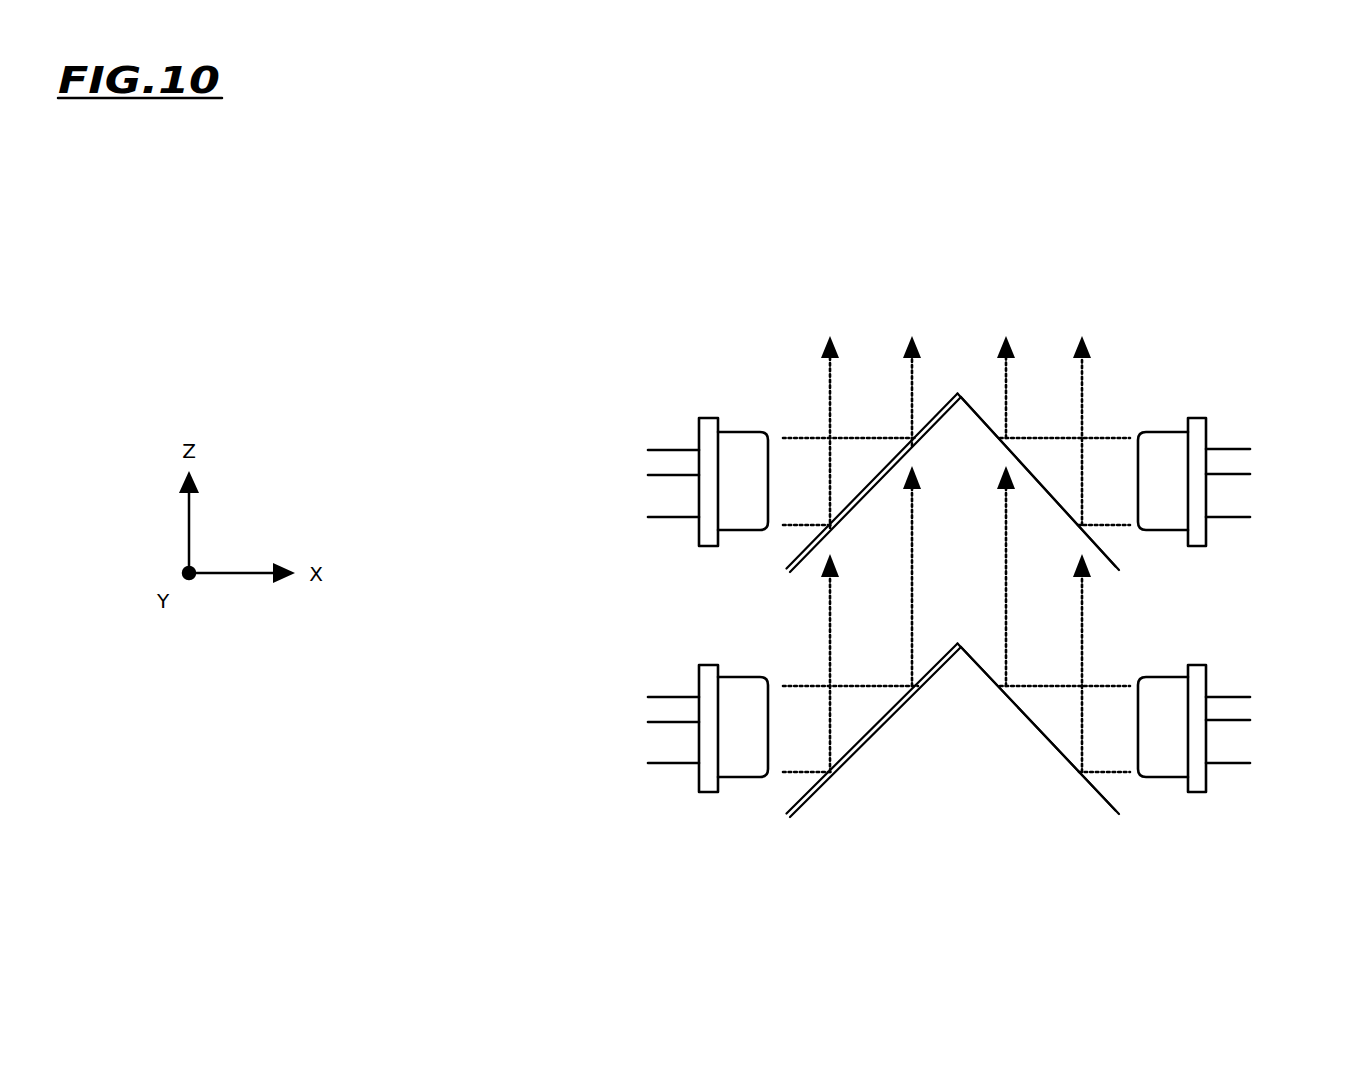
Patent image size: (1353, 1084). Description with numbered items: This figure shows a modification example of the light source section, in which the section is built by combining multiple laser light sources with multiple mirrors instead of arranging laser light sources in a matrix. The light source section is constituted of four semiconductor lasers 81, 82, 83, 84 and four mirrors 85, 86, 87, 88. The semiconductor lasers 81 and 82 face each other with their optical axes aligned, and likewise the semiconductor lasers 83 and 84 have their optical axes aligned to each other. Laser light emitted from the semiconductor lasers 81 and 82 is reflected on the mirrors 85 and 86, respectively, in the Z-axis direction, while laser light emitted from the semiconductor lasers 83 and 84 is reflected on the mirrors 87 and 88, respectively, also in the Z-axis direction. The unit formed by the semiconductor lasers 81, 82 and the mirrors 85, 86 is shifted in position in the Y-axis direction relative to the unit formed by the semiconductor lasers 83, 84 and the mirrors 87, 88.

The semiconductor laser 81 is at (666, 407).
The semiconductor laser 82 is at (1242, 405).
The semiconductor laser 83 is at (666, 803).
The semiconductor laser 84 is at (1242, 802).
The mirror 85 is at (795, 578).
The mirror 86 is at (1122, 575).
The mirror 87 is at (820, 803).
The mirror 88 is at (1095, 797).